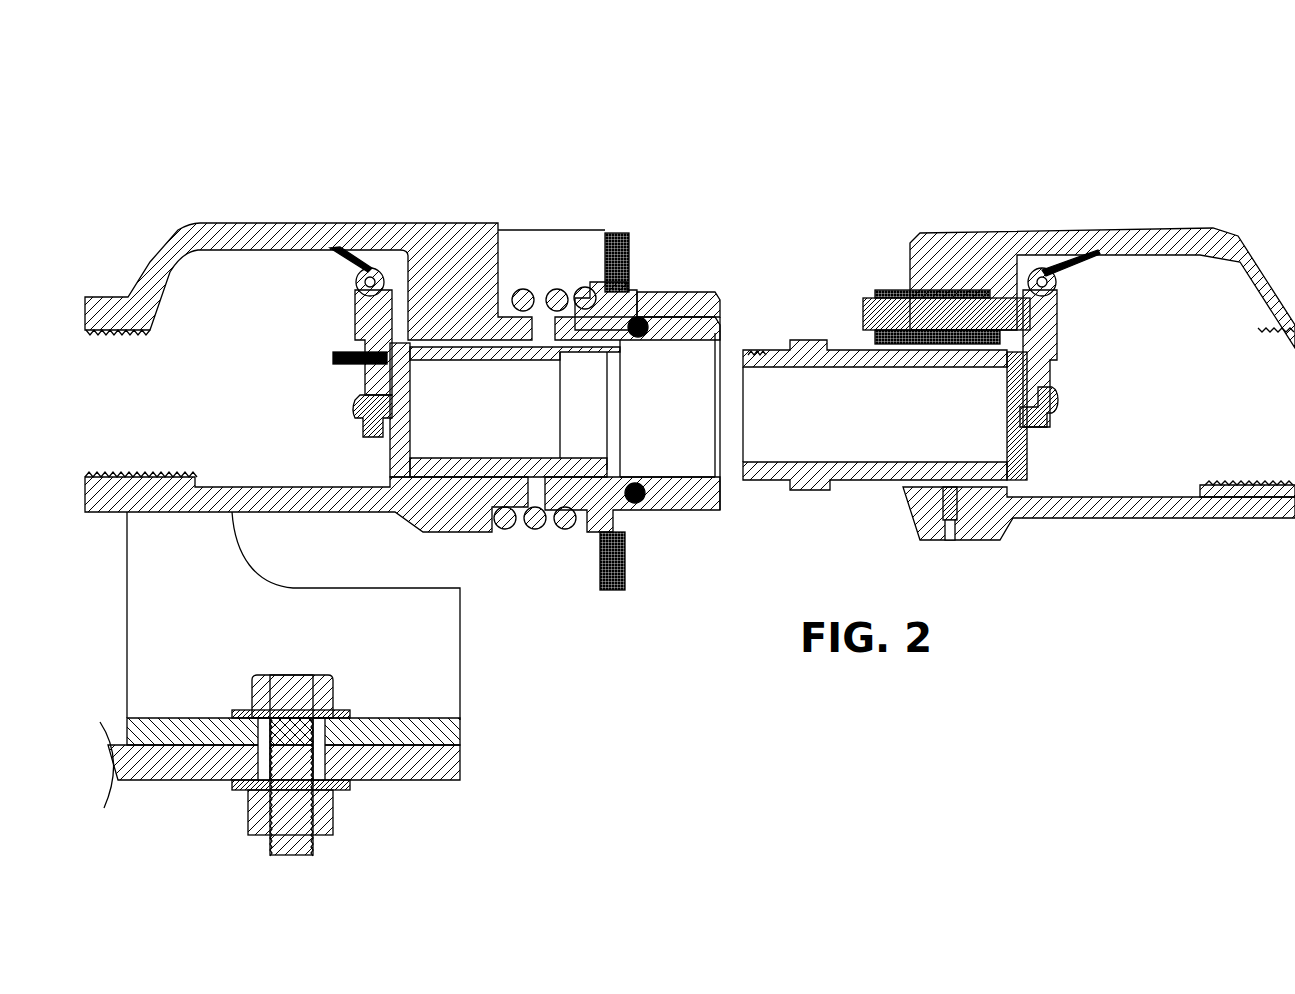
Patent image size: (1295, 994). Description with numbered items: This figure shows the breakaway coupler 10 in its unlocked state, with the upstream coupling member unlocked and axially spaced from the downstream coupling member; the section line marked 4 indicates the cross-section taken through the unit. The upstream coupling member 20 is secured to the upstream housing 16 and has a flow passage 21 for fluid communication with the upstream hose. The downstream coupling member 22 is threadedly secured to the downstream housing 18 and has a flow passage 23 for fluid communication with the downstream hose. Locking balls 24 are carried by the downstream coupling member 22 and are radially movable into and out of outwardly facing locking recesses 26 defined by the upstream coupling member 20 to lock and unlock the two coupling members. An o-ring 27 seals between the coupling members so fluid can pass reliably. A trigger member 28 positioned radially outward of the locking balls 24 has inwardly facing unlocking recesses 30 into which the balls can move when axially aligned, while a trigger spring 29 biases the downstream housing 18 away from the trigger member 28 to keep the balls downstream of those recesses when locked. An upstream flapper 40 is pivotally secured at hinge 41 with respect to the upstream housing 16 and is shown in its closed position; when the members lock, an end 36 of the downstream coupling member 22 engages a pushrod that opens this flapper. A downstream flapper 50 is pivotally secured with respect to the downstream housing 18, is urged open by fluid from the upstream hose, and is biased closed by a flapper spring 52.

The breakaway coupler 10 is at (770, 152).
The upstream housing 16 is at (1172, 243).
The downstream housing 18 is at (432, 255).
The upstream coupling member 20 is at (808, 348).
The flow passage 21 is at (852, 425).
The downstream coupling member 22 is at (693, 318).
The flow passage 23 is at (658, 436).
The locking balls 24 is at (645, 318).
The locking recesses 26 is at (828, 345).
The o-ring 27 is at (768, 350).
The trigger member 28 is at (600, 290).
The trigger spring 29 is at (554, 292).
The unlocking recesses 30 is at (653, 310).
The end of the downstream coupling member 36 is at (721, 500).
The upstream flapper 40 is at (1056, 401).
The hinge 41 is at (1047, 272).
The downstream flapper 50 is at (310, 312).
The flapper spring 52 is at (354, 256).
The section line 4- 4 is at (1042, 598).